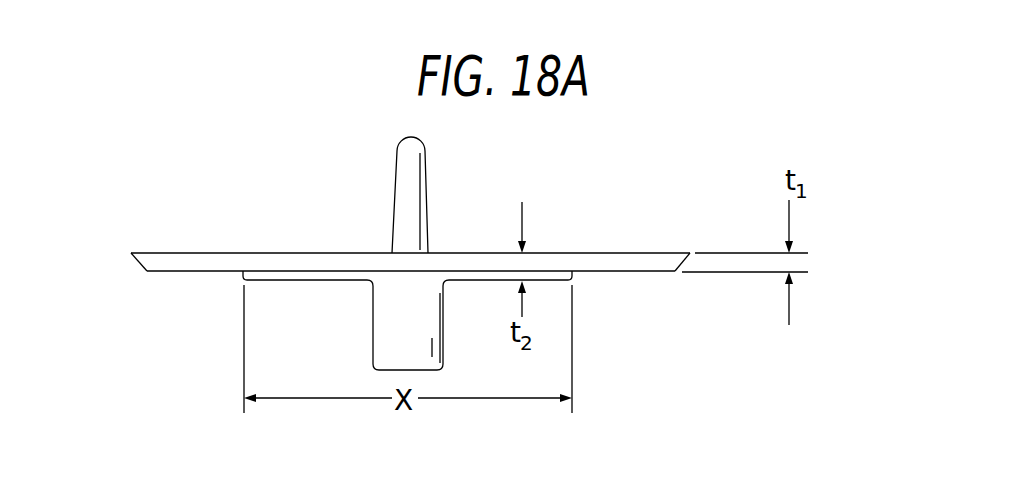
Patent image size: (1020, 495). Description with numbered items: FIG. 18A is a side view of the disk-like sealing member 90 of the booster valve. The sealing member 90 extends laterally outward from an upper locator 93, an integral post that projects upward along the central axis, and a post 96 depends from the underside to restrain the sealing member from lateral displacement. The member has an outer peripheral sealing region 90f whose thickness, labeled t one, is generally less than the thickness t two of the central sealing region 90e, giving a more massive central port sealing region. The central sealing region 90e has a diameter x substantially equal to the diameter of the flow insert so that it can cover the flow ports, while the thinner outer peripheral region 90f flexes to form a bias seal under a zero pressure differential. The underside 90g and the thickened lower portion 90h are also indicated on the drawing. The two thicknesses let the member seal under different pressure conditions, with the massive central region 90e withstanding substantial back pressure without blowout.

The sealing member 90 is at (428, 232).
The upper locator 93 is at (400, 143).
The central sealing region 90e is at (473, 253).
The outer peripheral sealing region 90f is at (660, 253).
The lower surface of plate 90g is at (617, 272).
The thickened lower portion 90h is at (338, 281).
The post 96 is at (373, 348).